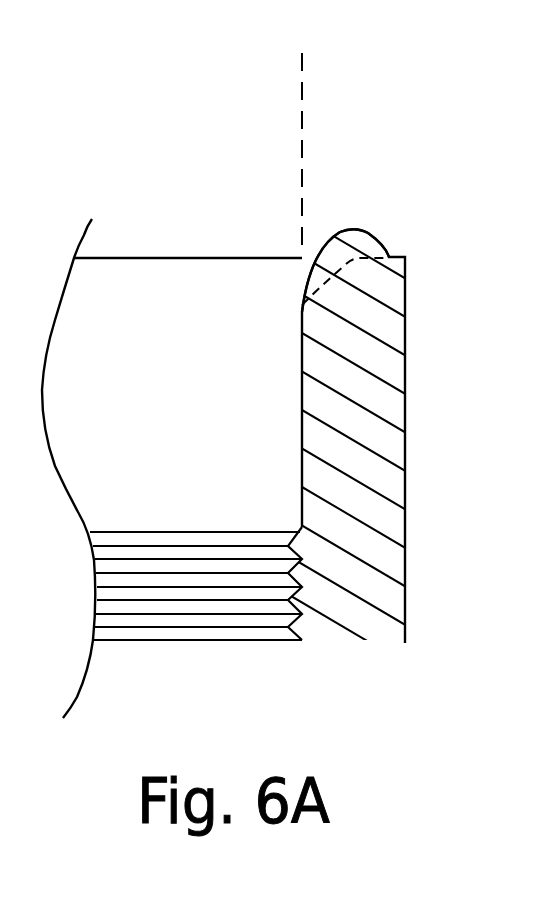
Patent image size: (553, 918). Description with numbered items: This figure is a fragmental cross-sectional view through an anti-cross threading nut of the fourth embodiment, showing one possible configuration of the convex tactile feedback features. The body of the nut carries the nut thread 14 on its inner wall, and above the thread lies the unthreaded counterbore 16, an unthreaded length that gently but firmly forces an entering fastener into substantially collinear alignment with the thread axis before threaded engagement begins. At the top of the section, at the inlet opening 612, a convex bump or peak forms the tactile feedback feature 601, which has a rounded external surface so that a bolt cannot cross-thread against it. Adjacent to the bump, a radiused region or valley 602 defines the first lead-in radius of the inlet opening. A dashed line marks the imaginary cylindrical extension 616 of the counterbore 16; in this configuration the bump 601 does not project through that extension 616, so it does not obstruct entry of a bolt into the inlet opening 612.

The nut thread 14 is at (287, 594).
The unthreaded counterbore 16 is at (275, 470).
The tactile feedback features 601 is at (355, 228).
The radiused regions 602 is at (400, 335).
The inlet opening 612 is at (313, 243).
The imaginary extension of counterbore 616 is at (300, 65).